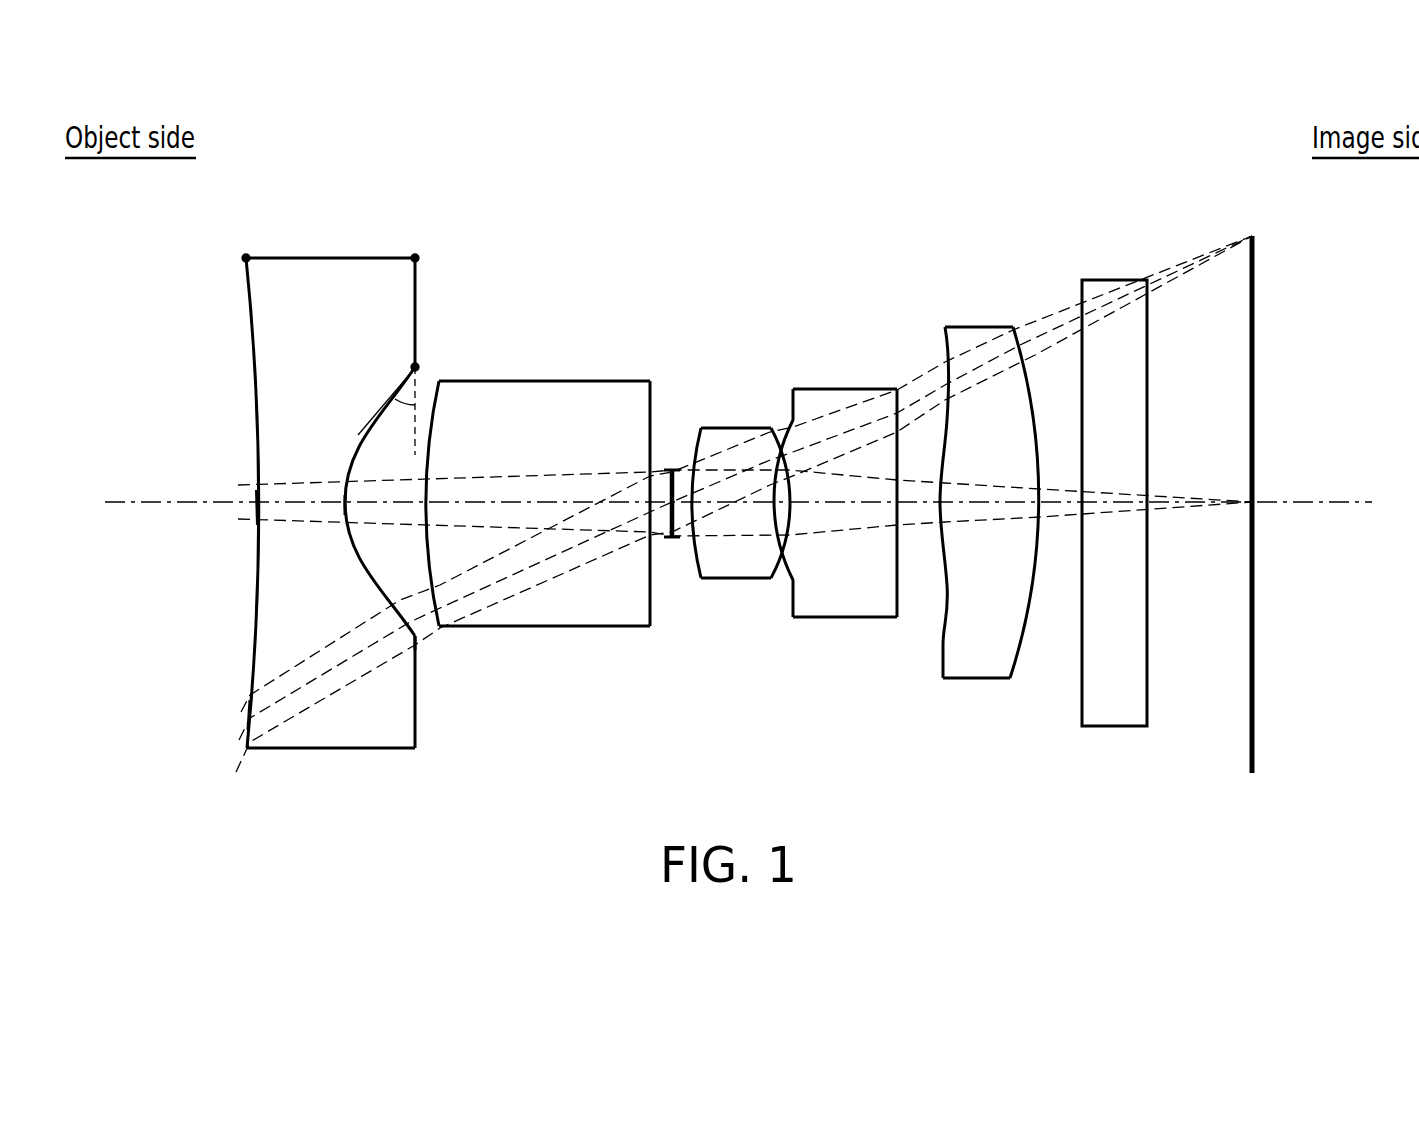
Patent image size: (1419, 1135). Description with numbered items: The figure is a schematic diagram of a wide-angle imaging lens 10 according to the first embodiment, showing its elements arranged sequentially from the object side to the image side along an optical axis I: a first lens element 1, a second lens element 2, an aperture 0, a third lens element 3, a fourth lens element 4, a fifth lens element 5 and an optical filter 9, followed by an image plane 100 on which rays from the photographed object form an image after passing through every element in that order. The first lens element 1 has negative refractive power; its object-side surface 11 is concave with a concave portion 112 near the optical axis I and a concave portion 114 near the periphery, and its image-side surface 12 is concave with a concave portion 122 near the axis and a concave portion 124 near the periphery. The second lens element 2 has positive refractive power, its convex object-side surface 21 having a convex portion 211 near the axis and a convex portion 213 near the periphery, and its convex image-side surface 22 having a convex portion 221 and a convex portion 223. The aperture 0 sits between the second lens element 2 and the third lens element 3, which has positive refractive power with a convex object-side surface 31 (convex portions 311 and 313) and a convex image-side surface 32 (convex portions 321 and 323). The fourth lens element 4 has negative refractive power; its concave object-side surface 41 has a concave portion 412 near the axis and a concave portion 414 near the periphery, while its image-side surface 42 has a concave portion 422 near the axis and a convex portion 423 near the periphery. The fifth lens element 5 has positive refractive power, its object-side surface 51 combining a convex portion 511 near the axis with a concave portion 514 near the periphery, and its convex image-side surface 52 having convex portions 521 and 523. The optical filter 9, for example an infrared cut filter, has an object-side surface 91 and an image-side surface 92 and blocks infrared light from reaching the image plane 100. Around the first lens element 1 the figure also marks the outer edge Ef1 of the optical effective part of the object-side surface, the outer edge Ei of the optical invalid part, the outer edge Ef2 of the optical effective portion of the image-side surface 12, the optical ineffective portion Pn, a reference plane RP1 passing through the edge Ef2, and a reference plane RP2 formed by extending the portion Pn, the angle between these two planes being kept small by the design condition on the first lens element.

The wide-angle imaging lens 10 is at (1347, 800).
The first lens element 1 is at (333, 258).
The object-side surface of first lens element 11 is at (251, 299).
The concave portion 112 is at (257, 510).
The concave portion 114 is at (250, 712).
The image-side surface of first lens element 12 is at (358, 433).
The concave portion 122 is at (347, 509).
The concave portion 124 is at (413, 640).
The second lens element 2 is at (545, 381).
The object-side surface of second lens element 21 is at (428, 417).
The convex portion 211 is at (430, 517).
The convex portion 213 is at (433, 593).
The image-side surface of second lens element 22 is at (651, 468).
The convex portion 221 is at (650, 512).
The convex portion 223 is at (650, 547).
The aperture 0 is at (677, 468).
The third lens element 3 is at (738, 428).
The object-side surface of third lens element 31 is at (699, 457).
The convex portion 311 is at (699, 515).
The convex portion 313 is at (699, 463).
The image-side surface of third lens element 32 is at (776, 438).
The convex portion 321 is at (789, 518).
The convex portion 323 is at (781, 455).
The fourth lens element 4 is at (848, 389).
The object-side surface of fourth lens element 41 is at (797, 432).
The concave portion 412 is at (811, 515).
The concave portion 414 is at (806, 455).
The image-side surface of fourth lens element 42 is at (897, 389).
The concave portion 422 is at (897, 518).
The convex portion 423 is at (897, 443).
The fifth lens element 5 is at (978, 327).
The object-side surface of fifth lens element 51 is at (946, 366).
The convex portion 511 is at (941, 519).
The concave portion 514 is at (948, 386).
The image-side surface of fifth lens element 52 is at (1014, 330).
The convex portion 521 is at (1038, 517).
The convex portion 523 is at (1016, 340).
The optical filter 9 is at (1112, 280).
The object-side surface of optical filter 91 is at (1082, 303).
The image-side surface of optical filter 92 is at (1147, 282).
The image plane 100 is at (1253, 262).
The optical axis I is at (170, 502).
The outer edge of optical effective part Ef1 is at (246, 258).
The outer edge of optical invalid part Ei is at (415, 258).
The outer edge of optical effective portion of image-side surface Ef2 is at (416, 367).
The optical ineffective portion Pn is at (416, 308).
The reference plane RP1 is at (360, 430).
The reference plane RP2 is at (415, 452).